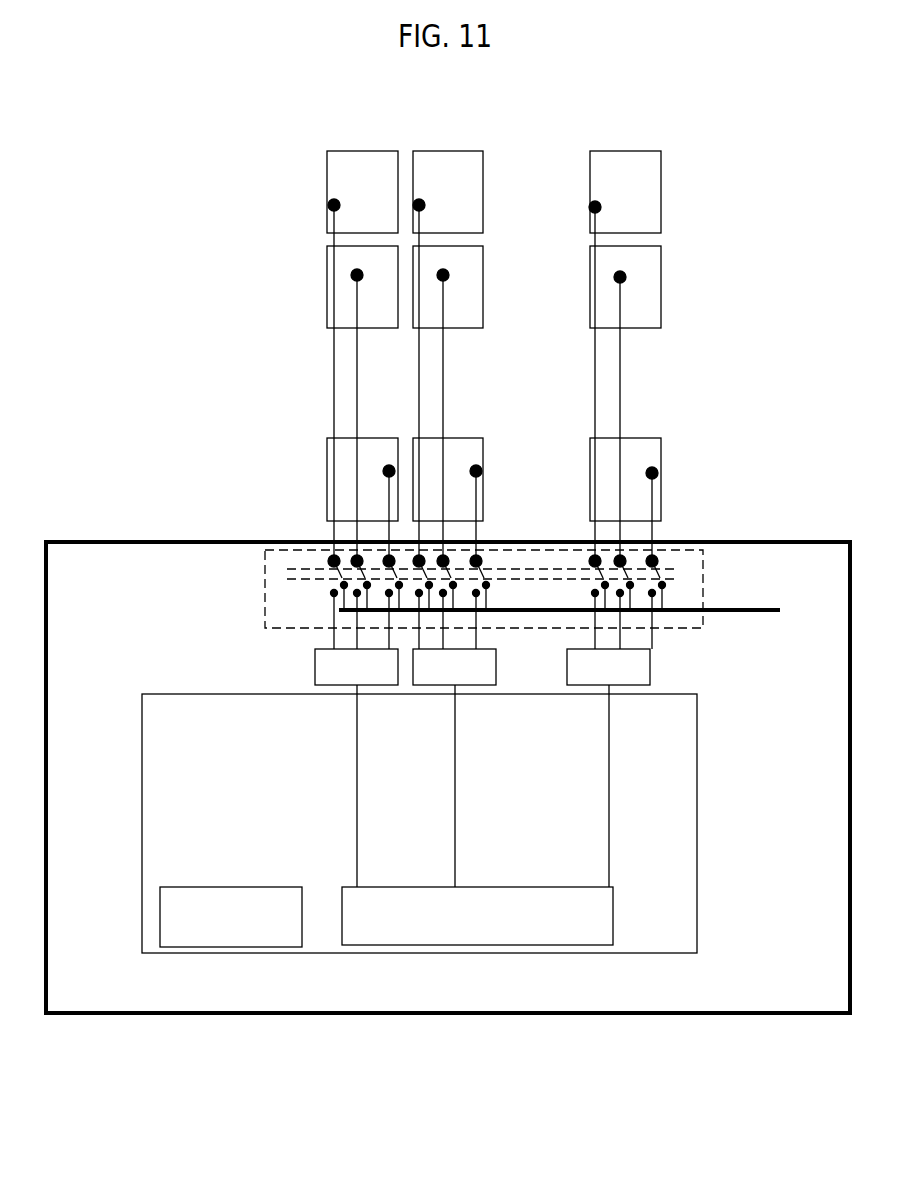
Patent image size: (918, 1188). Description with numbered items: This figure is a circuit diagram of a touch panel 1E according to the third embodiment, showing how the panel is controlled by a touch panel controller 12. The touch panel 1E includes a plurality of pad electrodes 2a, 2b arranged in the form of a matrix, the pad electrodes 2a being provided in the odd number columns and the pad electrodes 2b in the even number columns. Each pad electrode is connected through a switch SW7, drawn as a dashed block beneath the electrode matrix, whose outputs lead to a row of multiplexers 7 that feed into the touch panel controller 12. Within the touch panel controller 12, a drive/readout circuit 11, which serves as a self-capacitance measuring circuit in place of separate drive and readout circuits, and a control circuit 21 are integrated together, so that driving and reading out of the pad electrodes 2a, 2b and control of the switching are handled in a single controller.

The touch panel 1E is at (666, 127).
The pad electrode 2a is at (327, 193).
The pad electrode 2b is at (483, 193).
The switch SW7 is at (703, 563).
The multiplexer 7 is at (315, 668).
The touch panel controller 12 is at (142, 797).
The drive/readout circuit 11 is at (613, 919).
The control circuit 21 is at (226, 947).